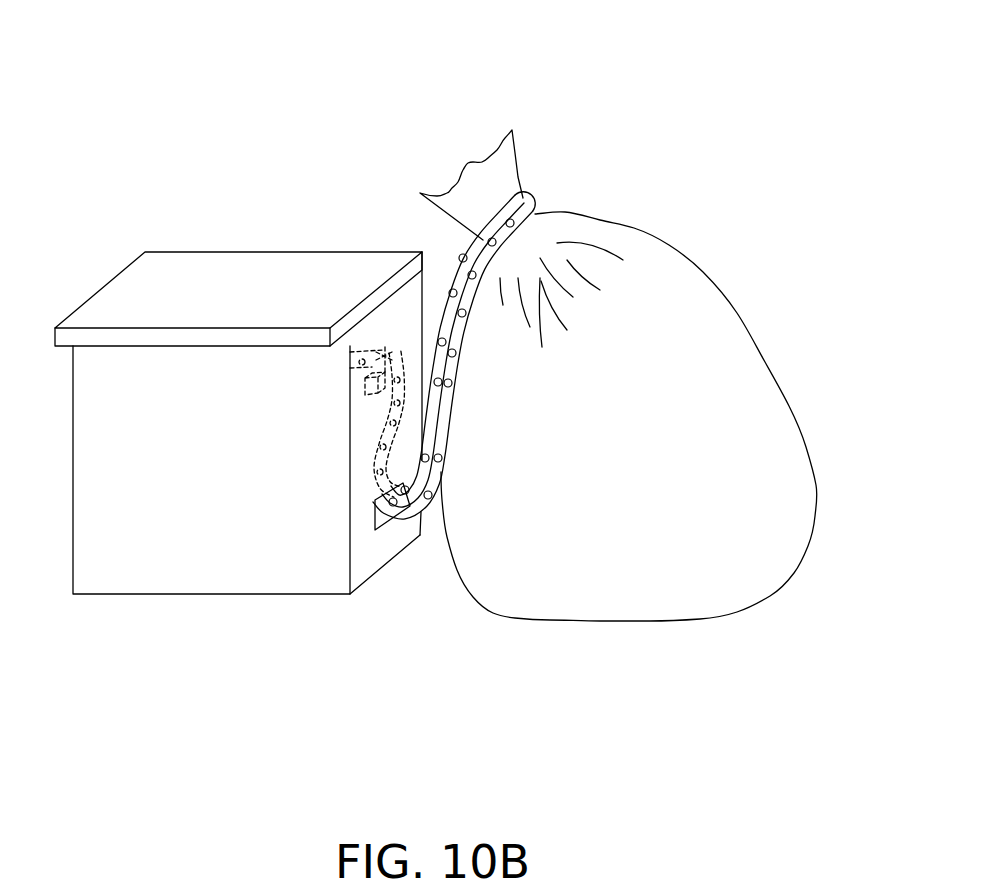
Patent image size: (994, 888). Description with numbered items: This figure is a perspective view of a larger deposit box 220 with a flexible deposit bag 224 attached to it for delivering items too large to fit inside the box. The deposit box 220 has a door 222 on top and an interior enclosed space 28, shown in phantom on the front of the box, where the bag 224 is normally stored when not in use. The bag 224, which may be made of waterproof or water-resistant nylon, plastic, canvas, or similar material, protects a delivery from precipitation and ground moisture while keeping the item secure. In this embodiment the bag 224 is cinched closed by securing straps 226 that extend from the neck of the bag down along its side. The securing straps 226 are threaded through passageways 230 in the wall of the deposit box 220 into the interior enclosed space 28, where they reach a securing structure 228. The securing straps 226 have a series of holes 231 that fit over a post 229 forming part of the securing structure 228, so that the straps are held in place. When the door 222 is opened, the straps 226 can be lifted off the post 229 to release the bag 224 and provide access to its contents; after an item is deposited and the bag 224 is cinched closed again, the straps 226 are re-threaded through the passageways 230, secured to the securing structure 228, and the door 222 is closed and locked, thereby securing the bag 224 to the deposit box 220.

The deposit box 220 is at (225, 492).
The door 222 is at (252, 302).
The flexible deposit bag 224 is at (636, 472).
The securing straps 226 is at (460, 248).
The securing structure 228 is at (370, 388).
The post 229 is at (384, 354).
The passageways 230 is at (380, 507).
The holes 231 is at (419, 372).
The interior enclosed space 28 is at (298, 560).